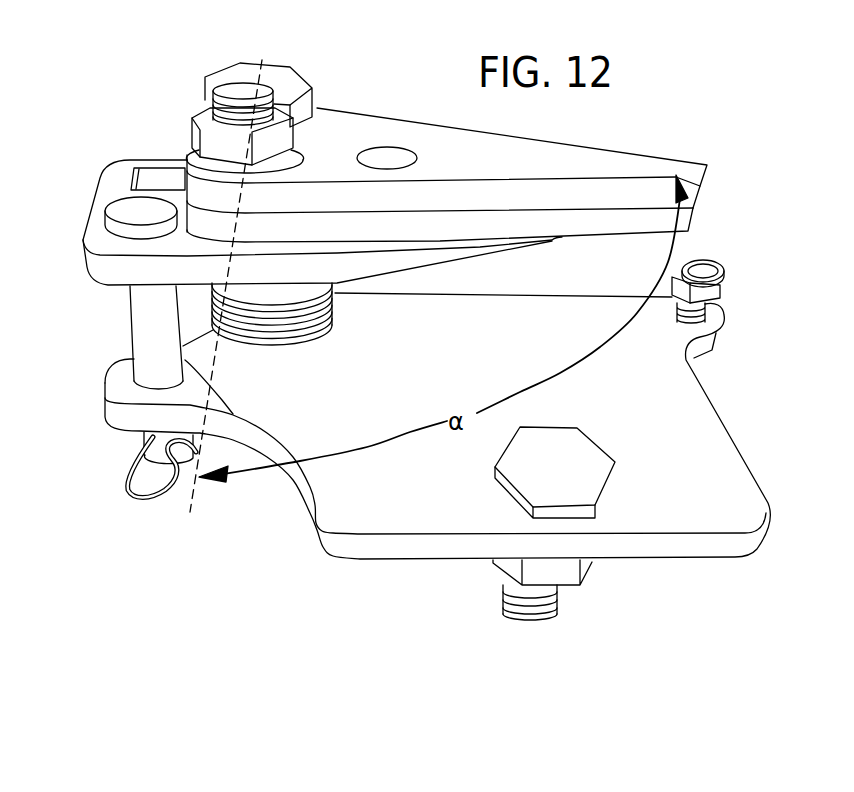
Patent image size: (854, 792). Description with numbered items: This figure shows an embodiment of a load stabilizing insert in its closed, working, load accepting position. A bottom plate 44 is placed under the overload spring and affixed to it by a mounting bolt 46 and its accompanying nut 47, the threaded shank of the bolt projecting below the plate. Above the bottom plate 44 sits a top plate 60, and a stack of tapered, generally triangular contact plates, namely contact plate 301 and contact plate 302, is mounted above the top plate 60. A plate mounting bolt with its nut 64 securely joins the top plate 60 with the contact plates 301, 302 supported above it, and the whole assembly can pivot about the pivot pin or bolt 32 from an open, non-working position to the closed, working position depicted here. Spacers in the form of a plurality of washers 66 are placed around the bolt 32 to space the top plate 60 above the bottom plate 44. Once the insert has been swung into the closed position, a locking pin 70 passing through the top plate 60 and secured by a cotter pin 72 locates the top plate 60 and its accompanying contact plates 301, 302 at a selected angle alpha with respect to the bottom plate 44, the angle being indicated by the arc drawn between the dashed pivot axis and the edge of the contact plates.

The pivot pin or bolt 32 is at (258, 73).
The nut 64 is at (197, 135).
The contact plate 301 is at (700, 190).
The contact plate 302 is at (697, 218).
The top plate 60 is at (98, 193).
The locking pin 70 is at (143, 320).
The cotter pin 72 is at (125, 478).
The washers 66 is at (287, 318).
The bottom plate 44 is at (747, 540).
The nut 47 is at (567, 572).
The mounting bolt 46 is at (560, 613).